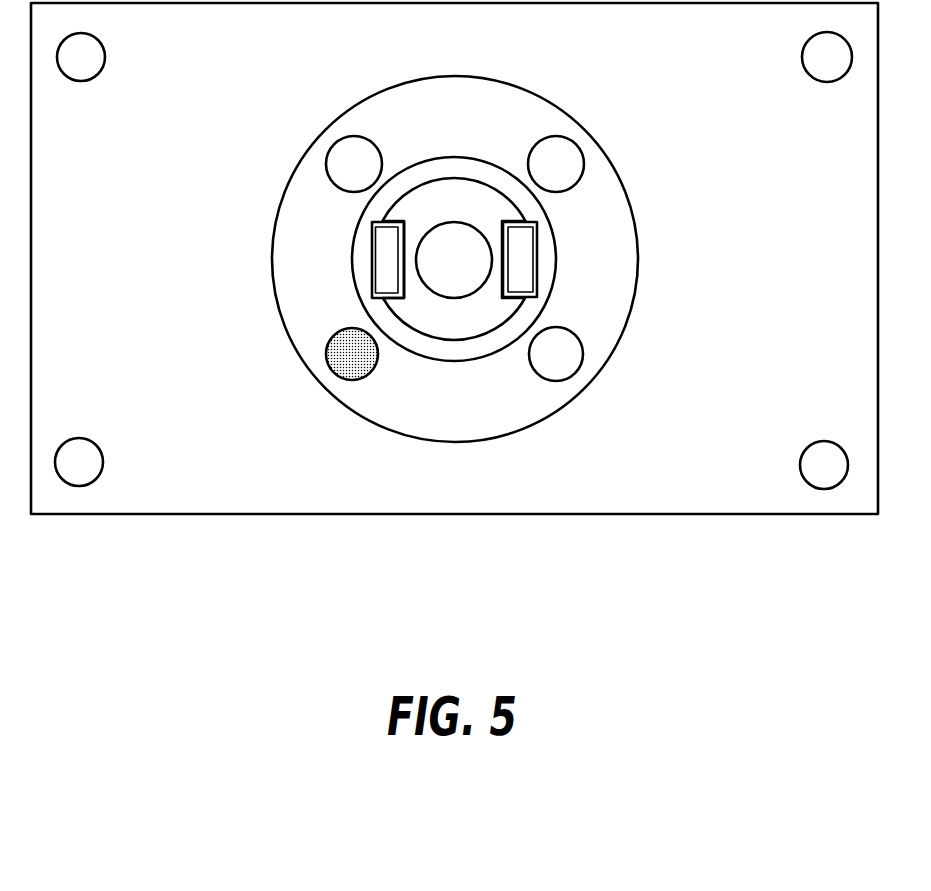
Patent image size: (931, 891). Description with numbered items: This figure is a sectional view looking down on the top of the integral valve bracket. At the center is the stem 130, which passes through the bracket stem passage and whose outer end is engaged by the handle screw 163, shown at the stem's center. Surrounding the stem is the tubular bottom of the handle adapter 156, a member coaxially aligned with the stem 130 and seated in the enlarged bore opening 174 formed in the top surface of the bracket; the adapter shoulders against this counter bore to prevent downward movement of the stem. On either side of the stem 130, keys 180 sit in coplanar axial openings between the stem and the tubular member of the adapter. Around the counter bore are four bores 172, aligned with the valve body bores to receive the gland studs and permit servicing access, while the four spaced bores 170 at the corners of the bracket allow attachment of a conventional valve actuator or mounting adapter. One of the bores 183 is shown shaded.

The stem 130 is at (433, 340).
The handle adapter 156 is at (412, 163).
The handle screw 163 is at (453, 223).
The spaced bores 170 is at (824, 442).
The bores 172 is at (557, 383).
The enlarged bore opening 174 is at (286, 260).
The keys 180 is at (537, 260).
The keyed hole 183 is at (352, 382).